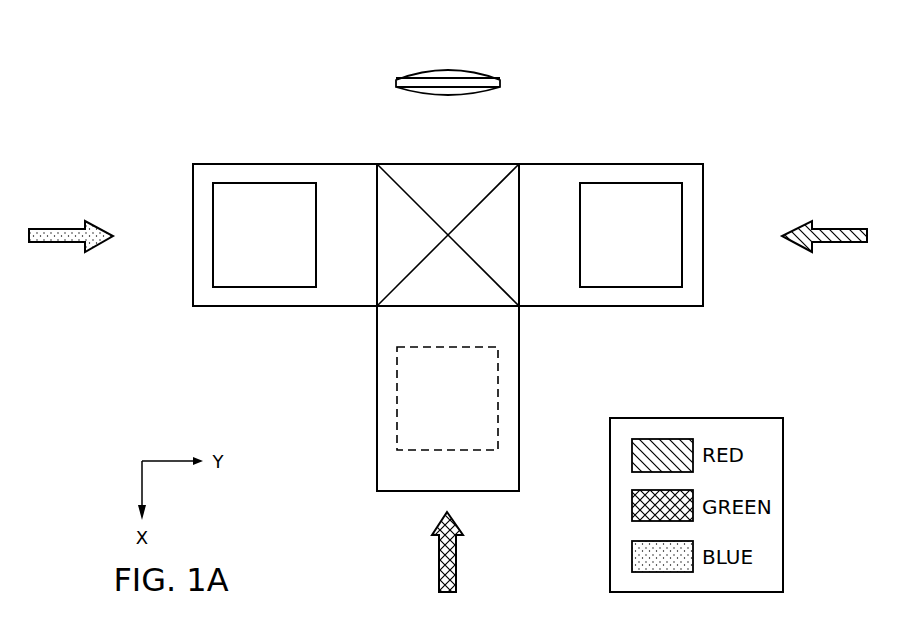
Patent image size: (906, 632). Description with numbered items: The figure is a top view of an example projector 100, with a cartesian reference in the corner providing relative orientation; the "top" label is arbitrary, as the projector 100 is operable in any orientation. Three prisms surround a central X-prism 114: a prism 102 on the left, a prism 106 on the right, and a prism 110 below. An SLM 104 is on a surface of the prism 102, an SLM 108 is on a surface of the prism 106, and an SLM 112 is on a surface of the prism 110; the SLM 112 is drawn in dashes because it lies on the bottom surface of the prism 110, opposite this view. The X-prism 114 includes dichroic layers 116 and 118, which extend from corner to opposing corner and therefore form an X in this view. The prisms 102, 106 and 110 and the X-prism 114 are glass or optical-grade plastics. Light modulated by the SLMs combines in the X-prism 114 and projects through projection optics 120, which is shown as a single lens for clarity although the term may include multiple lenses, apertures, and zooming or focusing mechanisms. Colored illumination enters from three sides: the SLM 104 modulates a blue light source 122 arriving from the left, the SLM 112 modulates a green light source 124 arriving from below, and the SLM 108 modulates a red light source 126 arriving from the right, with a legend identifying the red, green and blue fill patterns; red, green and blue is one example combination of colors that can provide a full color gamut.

The projector 100 is at (656, 66).
The prism 102 is at (193, 236).
The SLM 104 is at (283, 250).
The prism 106 is at (694, 234).
The SLM 108 is at (650, 250).
The prism 110 is at (384, 399).
The SLM 112 is at (467, 413).
The X-prism 114 is at (447, 168).
The dichroic layer 116 is at (502, 305).
The dichroic layer 118 is at (394, 305).
The projection optics 120 is at (396, 83).
The blue light source 122 is at (56, 230).
The green light source 124 is at (438, 557).
The red light source 126 is at (835, 228).